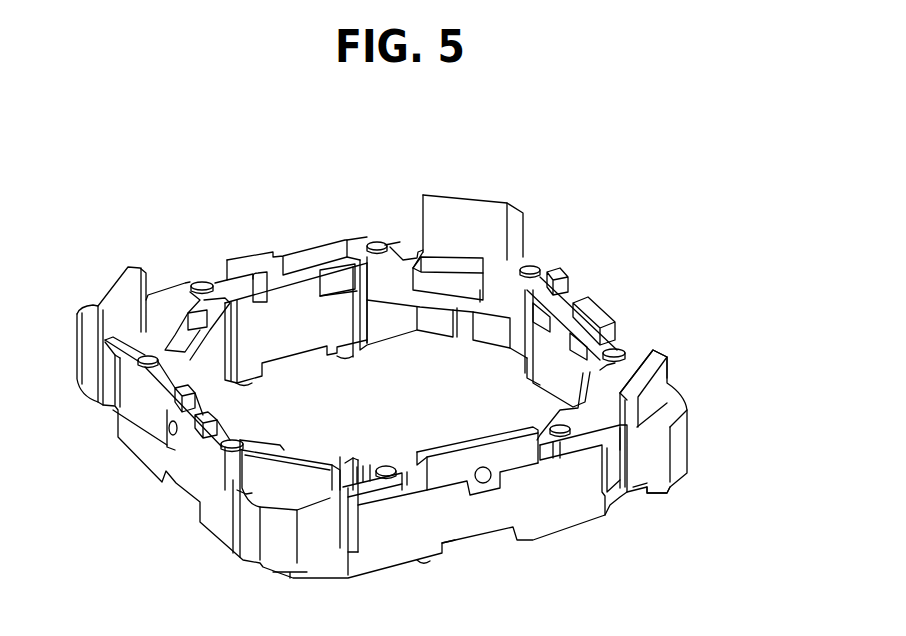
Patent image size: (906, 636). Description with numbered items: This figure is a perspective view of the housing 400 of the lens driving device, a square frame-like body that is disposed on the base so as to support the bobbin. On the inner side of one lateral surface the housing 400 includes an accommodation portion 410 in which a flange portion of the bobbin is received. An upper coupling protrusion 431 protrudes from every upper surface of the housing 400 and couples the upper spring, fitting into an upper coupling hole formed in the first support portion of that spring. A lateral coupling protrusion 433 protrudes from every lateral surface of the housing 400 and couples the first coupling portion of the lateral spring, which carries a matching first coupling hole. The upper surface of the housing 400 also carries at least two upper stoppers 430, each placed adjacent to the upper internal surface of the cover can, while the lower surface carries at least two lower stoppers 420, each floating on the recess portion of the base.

The housing 400 is at (121, 168).
The accommodation portion 410 is at (466, 285).
The lower stopper 420 is at (667, 488).
The upper stopper 430 is at (660, 373).
The upper coupling protrusion 431 is at (373, 242).
The lateral coupling protrusion 433 is at (483, 482).